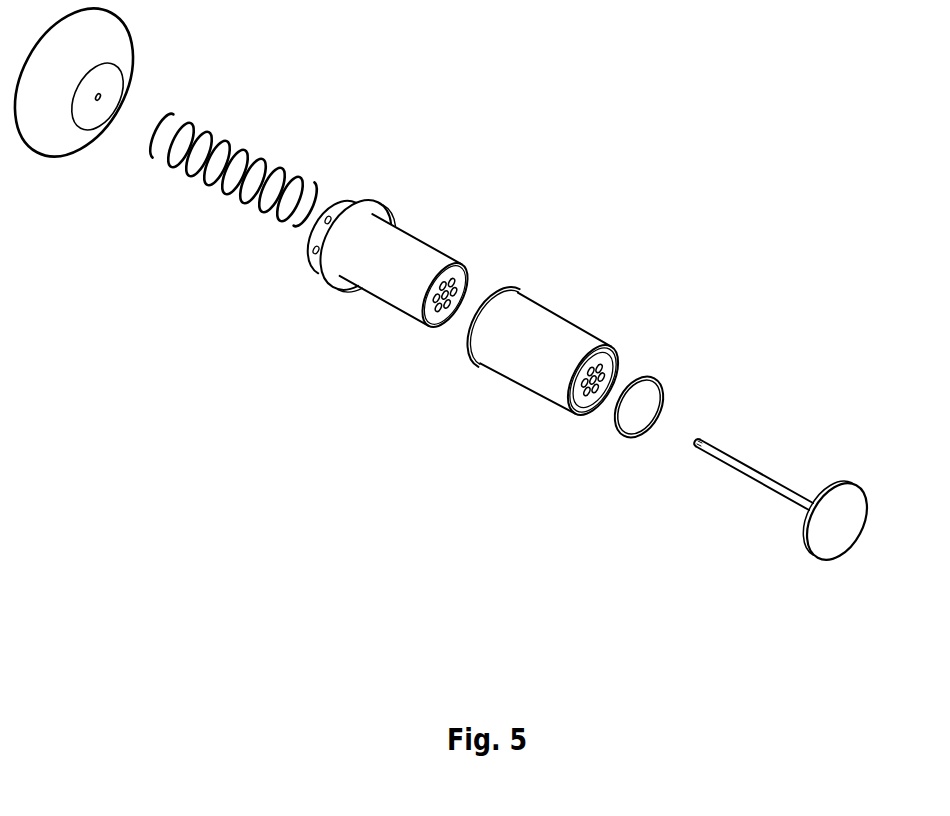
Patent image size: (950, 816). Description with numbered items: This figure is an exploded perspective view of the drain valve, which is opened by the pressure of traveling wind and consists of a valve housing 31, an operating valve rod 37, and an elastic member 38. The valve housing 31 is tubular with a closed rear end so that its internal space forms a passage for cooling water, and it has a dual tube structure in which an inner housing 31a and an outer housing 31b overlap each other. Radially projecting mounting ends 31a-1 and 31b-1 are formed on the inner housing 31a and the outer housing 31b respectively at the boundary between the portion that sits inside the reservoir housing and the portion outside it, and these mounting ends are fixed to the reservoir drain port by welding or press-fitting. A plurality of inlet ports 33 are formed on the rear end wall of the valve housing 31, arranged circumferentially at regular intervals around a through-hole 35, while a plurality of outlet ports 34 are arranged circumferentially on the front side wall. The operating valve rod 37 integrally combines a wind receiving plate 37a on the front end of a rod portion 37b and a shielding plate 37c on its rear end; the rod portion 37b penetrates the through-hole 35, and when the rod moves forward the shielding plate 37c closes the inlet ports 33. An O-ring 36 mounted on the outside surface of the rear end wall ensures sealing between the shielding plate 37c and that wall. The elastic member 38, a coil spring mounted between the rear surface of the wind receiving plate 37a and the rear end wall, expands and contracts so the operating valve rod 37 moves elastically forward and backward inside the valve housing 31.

The valve housing 31 is at (487, 335).
The inner housing 31a is at (418, 278).
The mounting end of inner housing 31a-1 is at (333, 281).
The outer housing 31b is at (571, 346).
The mounting end of outer housing 31b-1 is at (478, 366).
The inlet ports 33 is at (435, 316).
The outlet ports 34 is at (307, 253).
The through-hole 35 is at (608, 377).
The O-ring 36 is at (623, 435).
The operating valve rod 37 is at (760, 513).
The wind receiving plate 37a is at (60, 135).
The rod portion 37b is at (765, 485).
The shielding plate 37c is at (823, 543).
The elastic member 38 is at (207, 186).